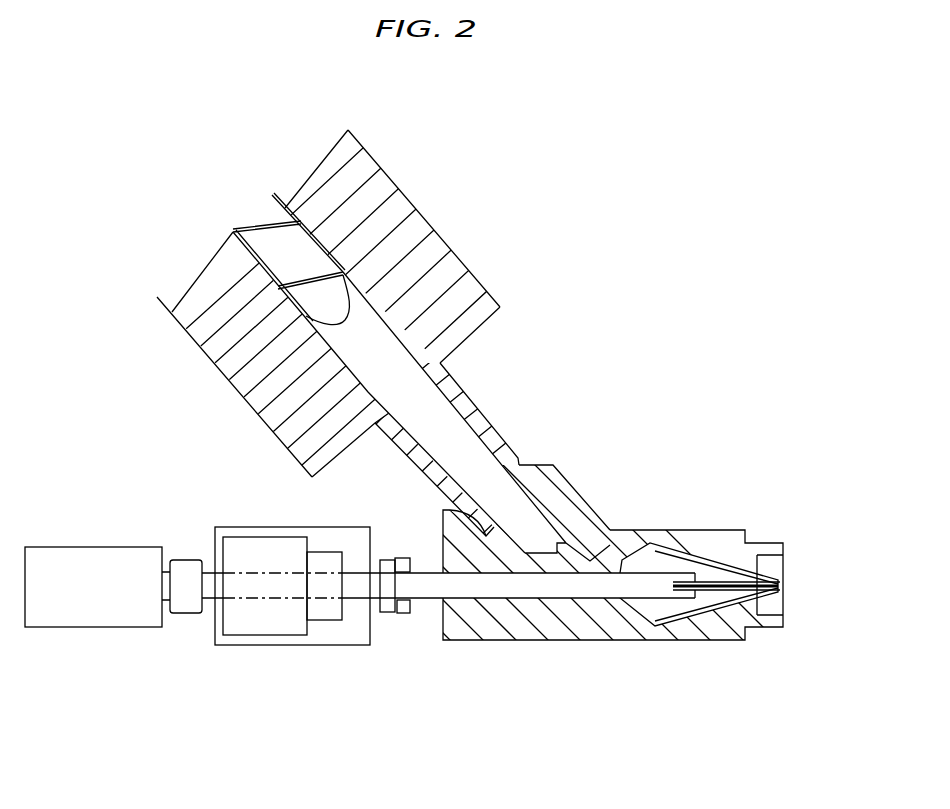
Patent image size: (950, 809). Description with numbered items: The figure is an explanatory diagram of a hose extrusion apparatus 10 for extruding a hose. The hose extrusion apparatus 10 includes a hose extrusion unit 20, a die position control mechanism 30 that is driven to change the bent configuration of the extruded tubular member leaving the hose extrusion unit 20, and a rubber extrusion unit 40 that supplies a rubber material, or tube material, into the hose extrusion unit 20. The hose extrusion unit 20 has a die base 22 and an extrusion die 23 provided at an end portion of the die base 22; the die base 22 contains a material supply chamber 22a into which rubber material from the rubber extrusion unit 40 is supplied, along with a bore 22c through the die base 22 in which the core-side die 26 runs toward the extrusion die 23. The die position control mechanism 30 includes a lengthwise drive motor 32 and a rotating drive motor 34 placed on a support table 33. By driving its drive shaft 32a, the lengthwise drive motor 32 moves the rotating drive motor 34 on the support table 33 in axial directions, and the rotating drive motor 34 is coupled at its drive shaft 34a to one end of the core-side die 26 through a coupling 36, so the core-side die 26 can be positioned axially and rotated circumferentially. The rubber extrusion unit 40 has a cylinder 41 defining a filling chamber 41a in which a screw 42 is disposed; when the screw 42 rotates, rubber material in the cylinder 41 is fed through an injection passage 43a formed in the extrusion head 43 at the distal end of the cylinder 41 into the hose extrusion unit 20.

The hose extrusion apparatus 10 is at (604, 266).
The hose extrusion unit 20 is at (553, 609).
The die base 22 is at (698, 530).
The material supply chamber 22a is at (596, 614).
The rod bore 22c is at (542, 585).
The extrusion die 23 is at (797, 561).
The core-side die 26 is at (478, 600).
The die position control mechanism 30 is at (234, 627).
The lengthwise drive motor 32 is at (125, 627).
The drive shaft 32a is at (208, 578).
The support table 33 is at (213, 645).
The rotating drive motor 34 is at (303, 603).
The drive shaft 34a is at (357, 553).
The coupling 36 is at (392, 642).
The rubber extrusion unit 40 is at (362, 340).
The cylinder 41 is at (421, 211).
The filling chamber 41a is at (370, 333).
The screw 42 is at (277, 280).
The extrusion head 43 is at (511, 446).
The injection passage 43a is at (553, 467).